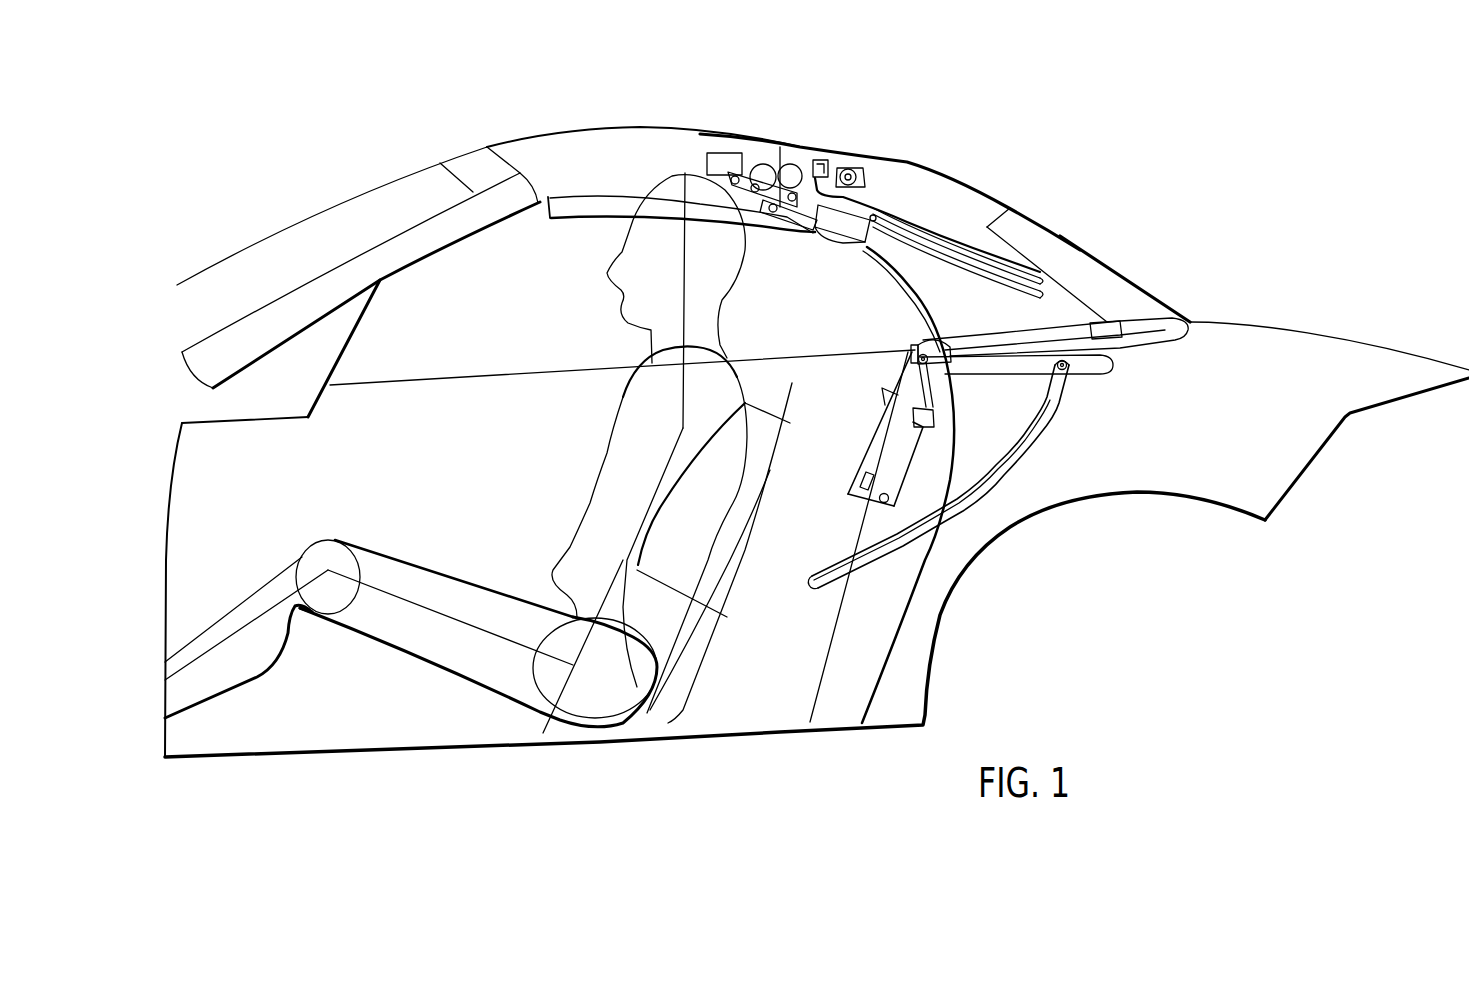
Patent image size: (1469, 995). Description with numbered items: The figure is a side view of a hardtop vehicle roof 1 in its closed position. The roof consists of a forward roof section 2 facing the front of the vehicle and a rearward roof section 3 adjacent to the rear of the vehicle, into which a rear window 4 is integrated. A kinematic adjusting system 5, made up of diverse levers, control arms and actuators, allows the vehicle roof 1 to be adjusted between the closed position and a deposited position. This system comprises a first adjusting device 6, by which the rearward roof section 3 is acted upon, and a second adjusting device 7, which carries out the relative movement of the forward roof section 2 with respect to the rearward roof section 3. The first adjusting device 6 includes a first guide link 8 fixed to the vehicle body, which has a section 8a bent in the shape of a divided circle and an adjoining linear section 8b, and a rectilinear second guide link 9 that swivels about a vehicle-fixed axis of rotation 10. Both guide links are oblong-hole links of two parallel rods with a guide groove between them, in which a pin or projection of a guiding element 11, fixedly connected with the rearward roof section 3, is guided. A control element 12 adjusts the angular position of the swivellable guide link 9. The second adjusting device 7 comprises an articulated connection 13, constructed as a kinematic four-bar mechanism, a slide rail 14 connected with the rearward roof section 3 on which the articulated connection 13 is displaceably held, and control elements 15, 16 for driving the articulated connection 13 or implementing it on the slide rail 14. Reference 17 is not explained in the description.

The hardtop vehicle roof 1 is at (925, 108).
The forward roof section 2 is at (568, 140).
The rearward roof section 3 is at (952, 185).
The rear window 4 is at (1085, 252).
The kinematic adjusting system 5 is at (892, 331).
The first adjusting device 6 is at (1100, 390).
The second adjusting device 7 is at (802, 137).
The first guide link 8 is at (967, 499).
The bent section 8a is at (1068, 402).
The linear section 8b is at (868, 580).
The second guide link 9 is at (985, 378).
The axis of rotation 10 is at (905, 358).
The guiding element 11 is at (1037, 378).
The control element 12 is at (882, 442).
The articulated connection 13 is at (762, 164).
The slide rail 14 is at (955, 272).
The control element 15 is at (846, 168).
The control element 16 is at (713, 153).
The roof frame 17 is at (1112, 345).